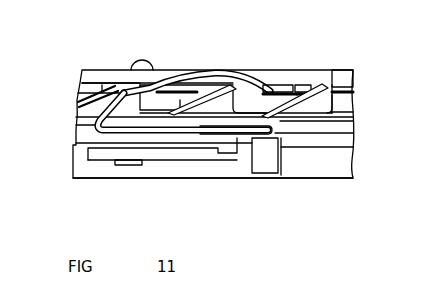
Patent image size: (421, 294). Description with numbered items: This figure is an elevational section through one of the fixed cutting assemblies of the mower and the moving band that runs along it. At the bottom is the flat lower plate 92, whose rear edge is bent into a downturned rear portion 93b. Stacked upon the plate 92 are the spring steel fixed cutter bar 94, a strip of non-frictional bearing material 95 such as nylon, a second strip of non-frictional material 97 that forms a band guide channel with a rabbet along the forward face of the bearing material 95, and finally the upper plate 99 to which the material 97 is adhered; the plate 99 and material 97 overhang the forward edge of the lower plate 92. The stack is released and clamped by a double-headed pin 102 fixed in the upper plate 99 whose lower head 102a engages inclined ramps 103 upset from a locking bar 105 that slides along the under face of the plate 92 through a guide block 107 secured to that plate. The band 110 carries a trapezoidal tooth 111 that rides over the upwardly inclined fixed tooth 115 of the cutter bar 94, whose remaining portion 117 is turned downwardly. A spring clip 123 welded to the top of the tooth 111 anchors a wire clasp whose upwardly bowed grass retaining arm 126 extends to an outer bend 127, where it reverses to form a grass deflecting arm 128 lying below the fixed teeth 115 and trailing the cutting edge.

The lower plate 92 is at (350, 133).
The downturned rear portion 93b is at (344, 180).
The fixed cutter bar 94 is at (349, 118).
The strip of non-frictional bearing material 95 is at (345, 103).
The strip of non-frictional material 97 is at (103, 84).
The upper plate 99 is at (97, 74).
The double-headed pin 102 is at (138, 62).
The lower head 102a is at (131, 166).
The inclined ramp 103 is at (187, 161).
The locking bar 105 is at (330, 145).
The guide block 107 is at (273, 167).
The band 110 is at (78, 92).
The tooth 111 is at (297, 91).
The fixed tooth 115 is at (337, 85).
The downwardly turned portion 117 is at (196, 105).
The spring clip 123 is at (279, 85).
The grass retaining arm 126 is at (206, 74).
The outer bend 127 is at (82, 128).
The grass deflecting arm 128 is at (237, 142).